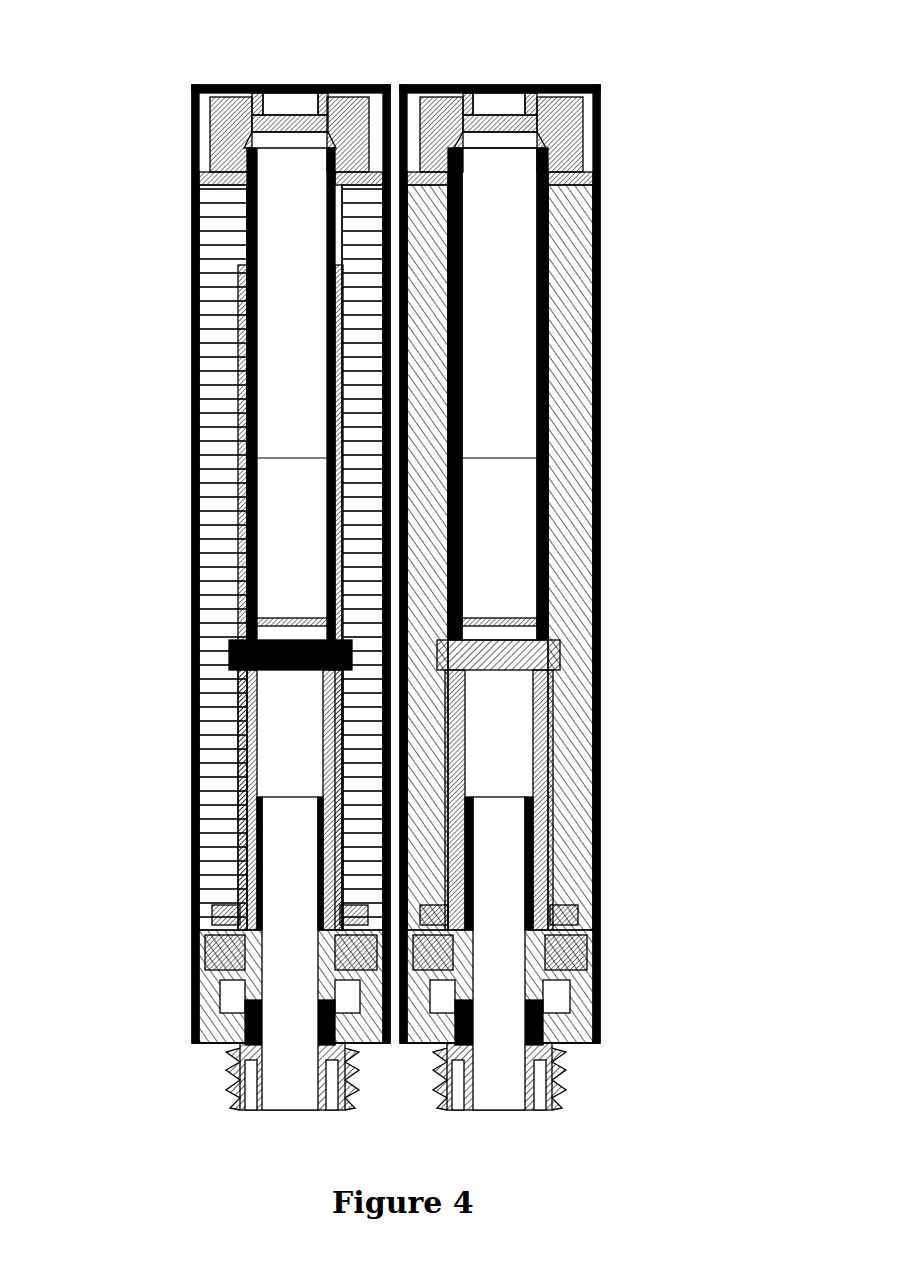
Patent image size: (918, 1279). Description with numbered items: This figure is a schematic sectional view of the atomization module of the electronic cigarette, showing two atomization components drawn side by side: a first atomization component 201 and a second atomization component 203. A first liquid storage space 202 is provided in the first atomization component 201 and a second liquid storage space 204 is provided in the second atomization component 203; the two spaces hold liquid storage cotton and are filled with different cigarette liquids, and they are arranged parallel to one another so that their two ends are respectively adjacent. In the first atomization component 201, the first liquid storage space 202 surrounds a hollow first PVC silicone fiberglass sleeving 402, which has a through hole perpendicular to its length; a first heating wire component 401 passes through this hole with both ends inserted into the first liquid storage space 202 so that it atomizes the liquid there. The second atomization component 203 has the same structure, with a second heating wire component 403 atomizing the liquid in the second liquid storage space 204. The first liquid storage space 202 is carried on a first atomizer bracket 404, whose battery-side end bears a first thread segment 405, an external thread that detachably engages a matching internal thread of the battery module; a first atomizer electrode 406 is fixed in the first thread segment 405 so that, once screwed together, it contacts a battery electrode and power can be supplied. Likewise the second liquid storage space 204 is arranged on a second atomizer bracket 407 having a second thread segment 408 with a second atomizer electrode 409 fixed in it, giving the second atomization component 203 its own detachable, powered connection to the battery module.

The first atomization component 201 is at (575, 598).
The first liquid storage space 202 is at (646, 557).
The second atomization component 203 is at (207, 586).
The second liquid storage space 204 is at (211, 557).
The first heating wire component 401 is at (583, 646).
The first PVC silicone fiberglass sleeving 402 is at (589, 394).
The second heating wire component 403 is at (219, 642).
The first atomizer bracket 404 is at (575, 975).
The first thread segment 405 is at (581, 1075).
The first atomizer electrode 406 is at (554, 976).
The second atomizer bracket 407 is at (207, 975).
The second thread segment 408 is at (203, 1076).
The second atomizer electrode 409 is at (236, 980).